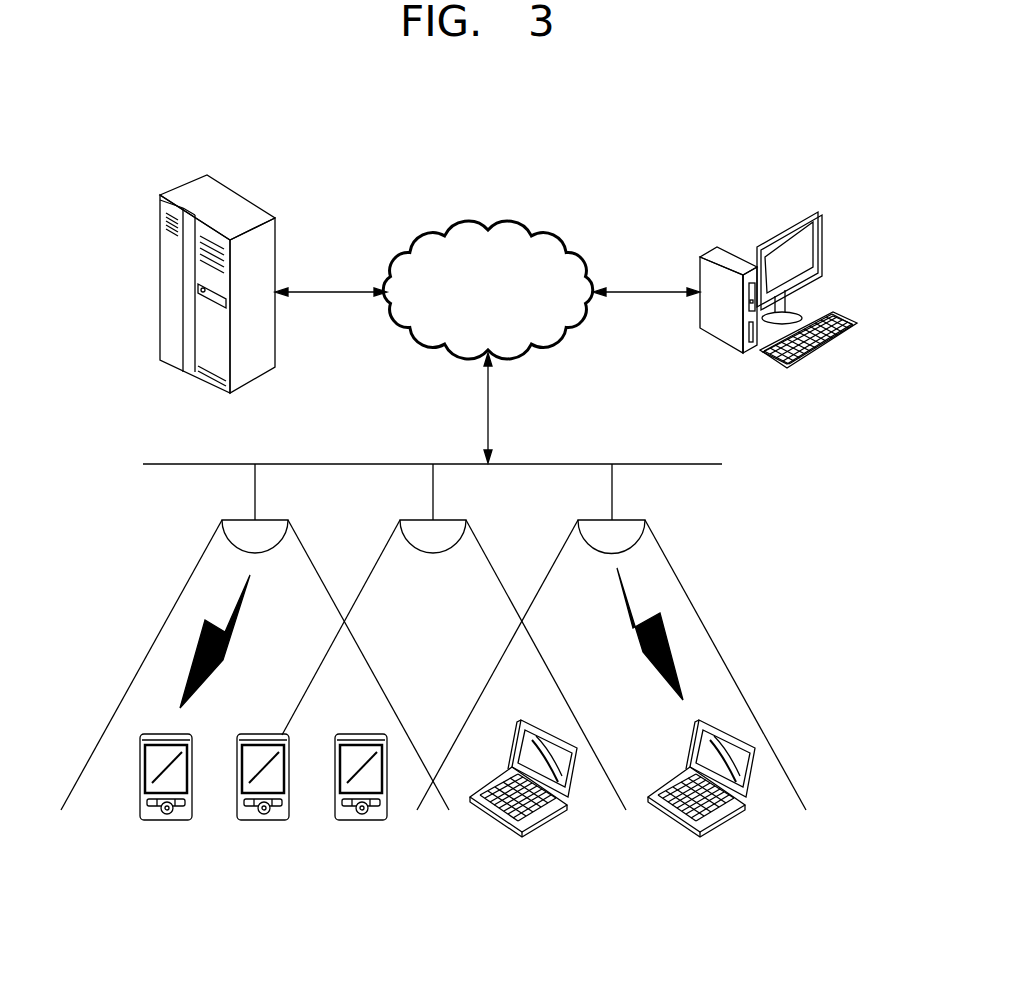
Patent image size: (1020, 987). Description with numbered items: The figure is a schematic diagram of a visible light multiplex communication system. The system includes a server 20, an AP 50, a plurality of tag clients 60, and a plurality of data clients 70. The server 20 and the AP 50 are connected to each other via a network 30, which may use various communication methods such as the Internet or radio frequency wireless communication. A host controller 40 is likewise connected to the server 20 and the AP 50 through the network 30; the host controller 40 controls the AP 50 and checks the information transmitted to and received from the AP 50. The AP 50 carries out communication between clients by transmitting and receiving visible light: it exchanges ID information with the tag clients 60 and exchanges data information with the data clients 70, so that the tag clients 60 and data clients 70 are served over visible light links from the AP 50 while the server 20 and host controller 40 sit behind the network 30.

The server 20 is at (242, 202).
The network 30 is at (484, 226).
The host controller 40 is at (728, 257).
The AP 50 is at (645, 522).
The tag clients 60 is at (272, 816).
The data clients 70 is at (565, 807).